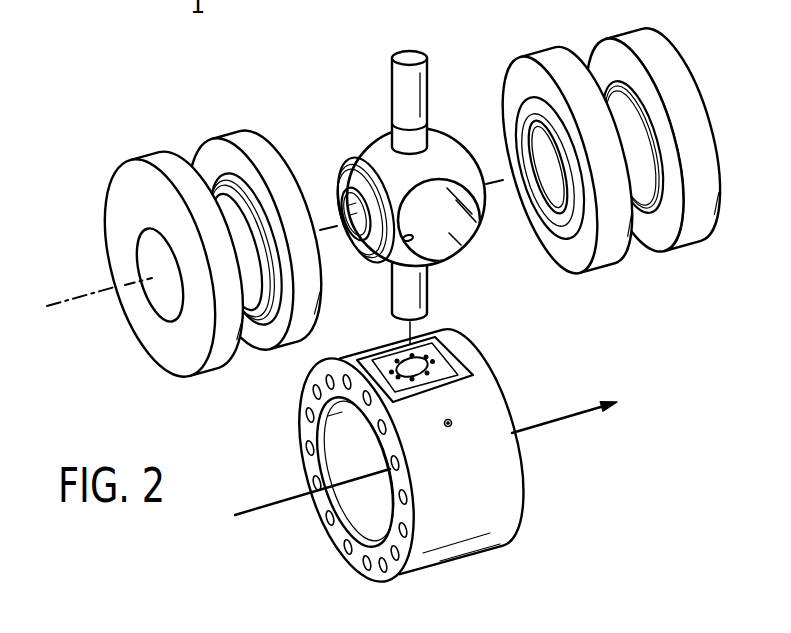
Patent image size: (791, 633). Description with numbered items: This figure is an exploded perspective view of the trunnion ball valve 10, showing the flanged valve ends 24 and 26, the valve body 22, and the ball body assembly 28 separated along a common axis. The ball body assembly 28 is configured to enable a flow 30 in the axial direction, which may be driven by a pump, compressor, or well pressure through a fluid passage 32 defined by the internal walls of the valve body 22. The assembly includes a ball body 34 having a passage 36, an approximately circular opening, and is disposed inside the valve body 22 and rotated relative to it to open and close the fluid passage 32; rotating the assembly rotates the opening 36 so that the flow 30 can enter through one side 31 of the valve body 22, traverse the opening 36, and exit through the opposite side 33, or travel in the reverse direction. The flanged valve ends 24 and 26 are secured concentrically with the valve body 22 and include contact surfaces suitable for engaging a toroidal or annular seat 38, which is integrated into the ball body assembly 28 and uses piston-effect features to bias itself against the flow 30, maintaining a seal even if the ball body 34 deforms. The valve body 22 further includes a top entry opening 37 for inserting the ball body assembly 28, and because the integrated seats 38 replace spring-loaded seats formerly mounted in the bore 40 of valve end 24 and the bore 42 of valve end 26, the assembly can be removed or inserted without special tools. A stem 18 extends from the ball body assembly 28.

The trunnion ball valve 10 is at (250, 98).
The stem 18 is at (412, 44).
The valve body 22 is at (392, 450).
The flanged valve end 24 is at (196, 252).
The flanged valve end 26 is at (623, 36).
The ball body assembly 28 is at (390, 174).
The flow 30 is at (566, 413).
The side of the valve body 31 is at (288, 440).
The fluid passage 32 is at (364, 452).
The opposite side of the valve body 33 is at (508, 368).
The ball body 34 is at (379, 132).
The passage 36 is at (459, 251).
The top entry opening 37 is at (355, 363).
The annular seat 38 is at (348, 168).
The bore 40 is at (152, 265).
The bore 42 is at (525, 110).